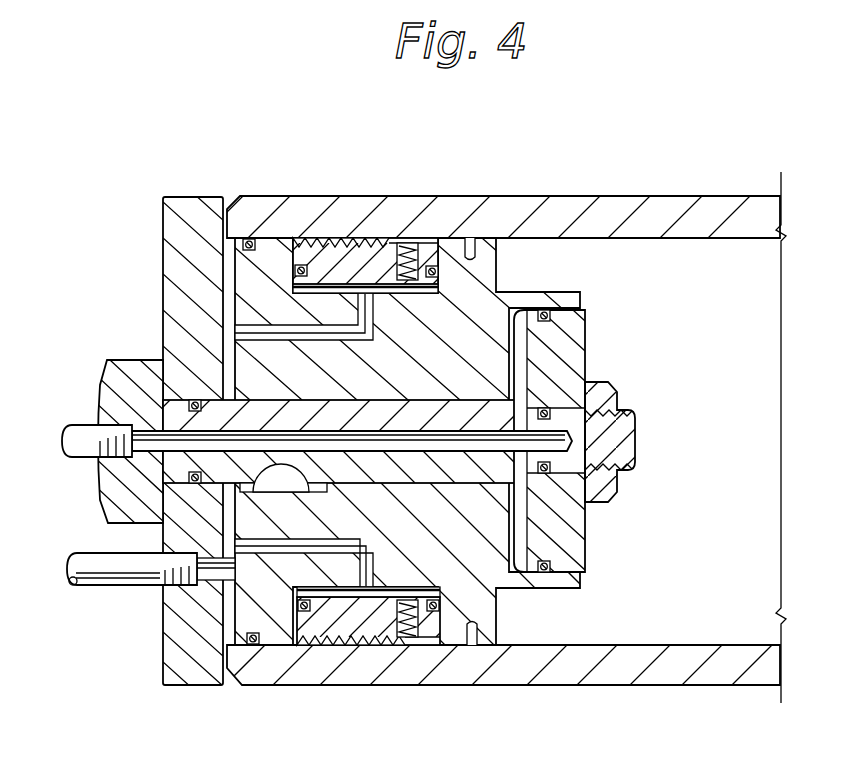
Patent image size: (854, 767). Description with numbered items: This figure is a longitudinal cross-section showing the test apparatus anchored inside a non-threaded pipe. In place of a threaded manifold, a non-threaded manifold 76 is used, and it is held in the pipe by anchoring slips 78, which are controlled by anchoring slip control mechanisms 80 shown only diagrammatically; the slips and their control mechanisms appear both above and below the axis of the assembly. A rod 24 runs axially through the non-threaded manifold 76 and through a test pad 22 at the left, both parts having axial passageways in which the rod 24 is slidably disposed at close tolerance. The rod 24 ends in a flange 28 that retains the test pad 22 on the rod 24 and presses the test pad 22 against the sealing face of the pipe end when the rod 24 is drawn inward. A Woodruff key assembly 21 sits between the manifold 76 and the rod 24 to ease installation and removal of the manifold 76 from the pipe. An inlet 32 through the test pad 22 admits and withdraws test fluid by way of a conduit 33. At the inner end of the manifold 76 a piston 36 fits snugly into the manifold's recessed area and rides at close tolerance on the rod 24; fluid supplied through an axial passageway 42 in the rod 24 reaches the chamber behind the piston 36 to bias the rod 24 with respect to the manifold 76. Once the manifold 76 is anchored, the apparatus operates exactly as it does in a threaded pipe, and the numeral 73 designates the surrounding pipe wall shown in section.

The Woodruff key assembly 21 is at (291, 489).
The test pad 22 is at (195, 197).
The rod 24 is at (622, 442).
The flange 28 is at (112, 510).
The inlet 32 is at (212, 575).
The conduit 33 is at (74, 588).
The piston 36 is at (585, 545).
The axial passageway 42 is at (150, 430).
The pipe wall 73 is at (554, 672).
The non-threaded manifold 76 is at (477, 327).
The anchoring slips 78 is at (348, 243).
The anchoring slip control mechanisms 80 is at (247, 333).